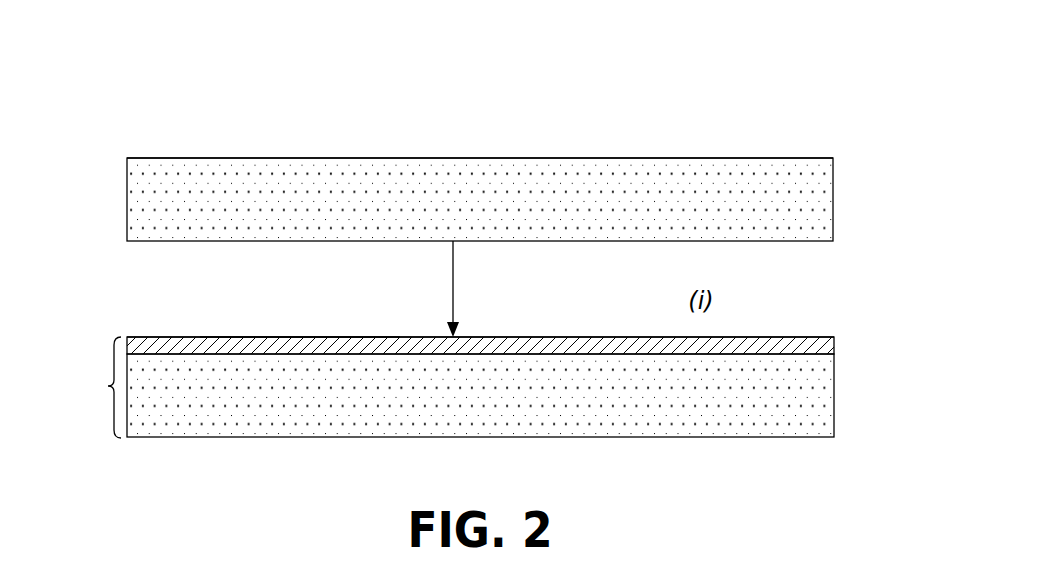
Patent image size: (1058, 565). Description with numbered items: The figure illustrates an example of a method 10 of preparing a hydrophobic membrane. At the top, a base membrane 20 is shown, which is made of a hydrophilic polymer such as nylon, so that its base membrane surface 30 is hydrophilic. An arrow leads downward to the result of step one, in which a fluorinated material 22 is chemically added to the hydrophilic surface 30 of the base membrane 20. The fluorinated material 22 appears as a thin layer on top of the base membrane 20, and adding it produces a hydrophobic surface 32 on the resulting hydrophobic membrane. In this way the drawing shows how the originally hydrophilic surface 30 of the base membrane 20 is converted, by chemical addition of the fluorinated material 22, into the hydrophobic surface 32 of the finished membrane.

The assembly / method 10 is at (152, 64).
The base membrane 20 is at (843, 199).
The fluorinated material 22 is at (844, 344).
The base membrane surface 30 is at (258, 148).
The hydrophobic surface 32 is at (258, 326).